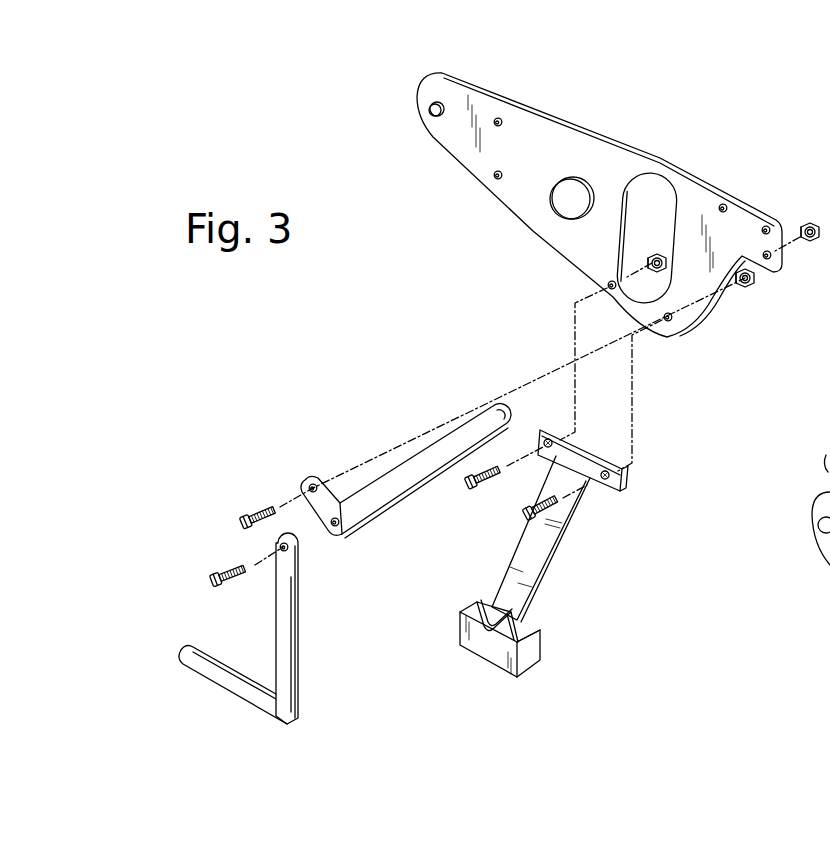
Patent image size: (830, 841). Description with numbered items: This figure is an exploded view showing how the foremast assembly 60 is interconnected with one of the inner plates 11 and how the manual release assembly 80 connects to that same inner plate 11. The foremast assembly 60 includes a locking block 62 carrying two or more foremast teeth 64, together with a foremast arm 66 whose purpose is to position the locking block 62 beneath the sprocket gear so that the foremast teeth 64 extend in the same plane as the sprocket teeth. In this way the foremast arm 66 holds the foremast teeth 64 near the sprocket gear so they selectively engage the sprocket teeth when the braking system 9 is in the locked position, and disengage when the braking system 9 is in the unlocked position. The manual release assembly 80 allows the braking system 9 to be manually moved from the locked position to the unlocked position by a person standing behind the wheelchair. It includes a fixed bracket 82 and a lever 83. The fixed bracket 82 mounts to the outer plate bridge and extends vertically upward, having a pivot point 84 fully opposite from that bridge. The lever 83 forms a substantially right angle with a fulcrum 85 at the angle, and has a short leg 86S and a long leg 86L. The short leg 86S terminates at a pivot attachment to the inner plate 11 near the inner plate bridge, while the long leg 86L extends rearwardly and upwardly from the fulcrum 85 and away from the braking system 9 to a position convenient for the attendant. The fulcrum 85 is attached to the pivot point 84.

The inner plate 11 is at (622, 140).
The foremast assembly 60 is at (533, 595).
The locking block 62 is at (524, 632).
The foremast teeth 64 is at (497, 600).
The foremast arm 66 is at (558, 552).
The manual release assembly 80 is at (277, 671).
The fixed bracket 82 is at (293, 725).
The pivot point 84 is at (285, 550).
The lever 83 is at (404, 487).
The fulcrum 85 is at (336, 525).
The short leg 86S is at (305, 480).
The long leg 86L is at (437, 468).
The braking system 9 is at (805, 675).